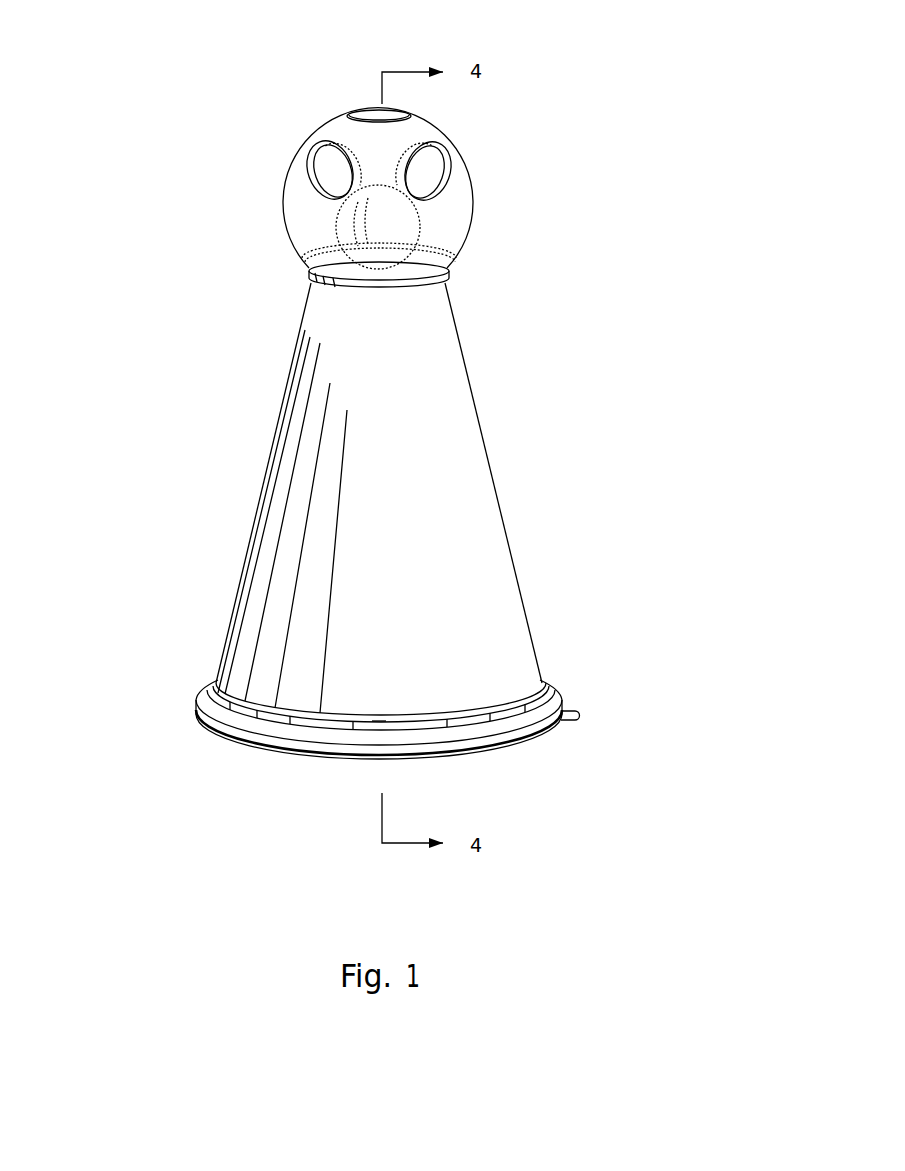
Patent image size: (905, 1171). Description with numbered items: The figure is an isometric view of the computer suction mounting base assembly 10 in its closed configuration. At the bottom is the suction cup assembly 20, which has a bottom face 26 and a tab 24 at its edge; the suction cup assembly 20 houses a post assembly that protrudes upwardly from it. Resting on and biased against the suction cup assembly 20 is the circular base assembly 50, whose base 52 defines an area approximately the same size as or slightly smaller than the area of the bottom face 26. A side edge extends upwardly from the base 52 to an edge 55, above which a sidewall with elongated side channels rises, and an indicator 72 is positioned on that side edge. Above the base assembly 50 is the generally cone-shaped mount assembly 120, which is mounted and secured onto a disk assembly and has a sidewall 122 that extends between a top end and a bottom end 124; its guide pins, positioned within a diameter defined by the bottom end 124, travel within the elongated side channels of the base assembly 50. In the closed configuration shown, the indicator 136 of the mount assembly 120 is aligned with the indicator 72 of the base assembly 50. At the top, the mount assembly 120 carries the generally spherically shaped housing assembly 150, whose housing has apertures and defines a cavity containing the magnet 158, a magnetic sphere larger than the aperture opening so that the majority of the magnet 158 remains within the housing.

The computer suction mounting base assembly 10 is at (677, 100).
The housing assembly 150 is at (318, 125).
The magnet 158 is at (340, 214).
The mount assembly 120 is at (298, 325).
The sidewall 122 is at (432, 383).
The bottom end 124 is at (488, 705).
The indicator 136 is at (378, 716).
The base assembly 50 is at (192, 686).
The base 52 is at (297, 732).
The suction cup assembly 20 is at (212, 745).
The bottom face 26 is at (523, 745).
The edge 55 is at (452, 720).
The tab 24 is at (578, 710).
The indicator 72 is at (378, 722).